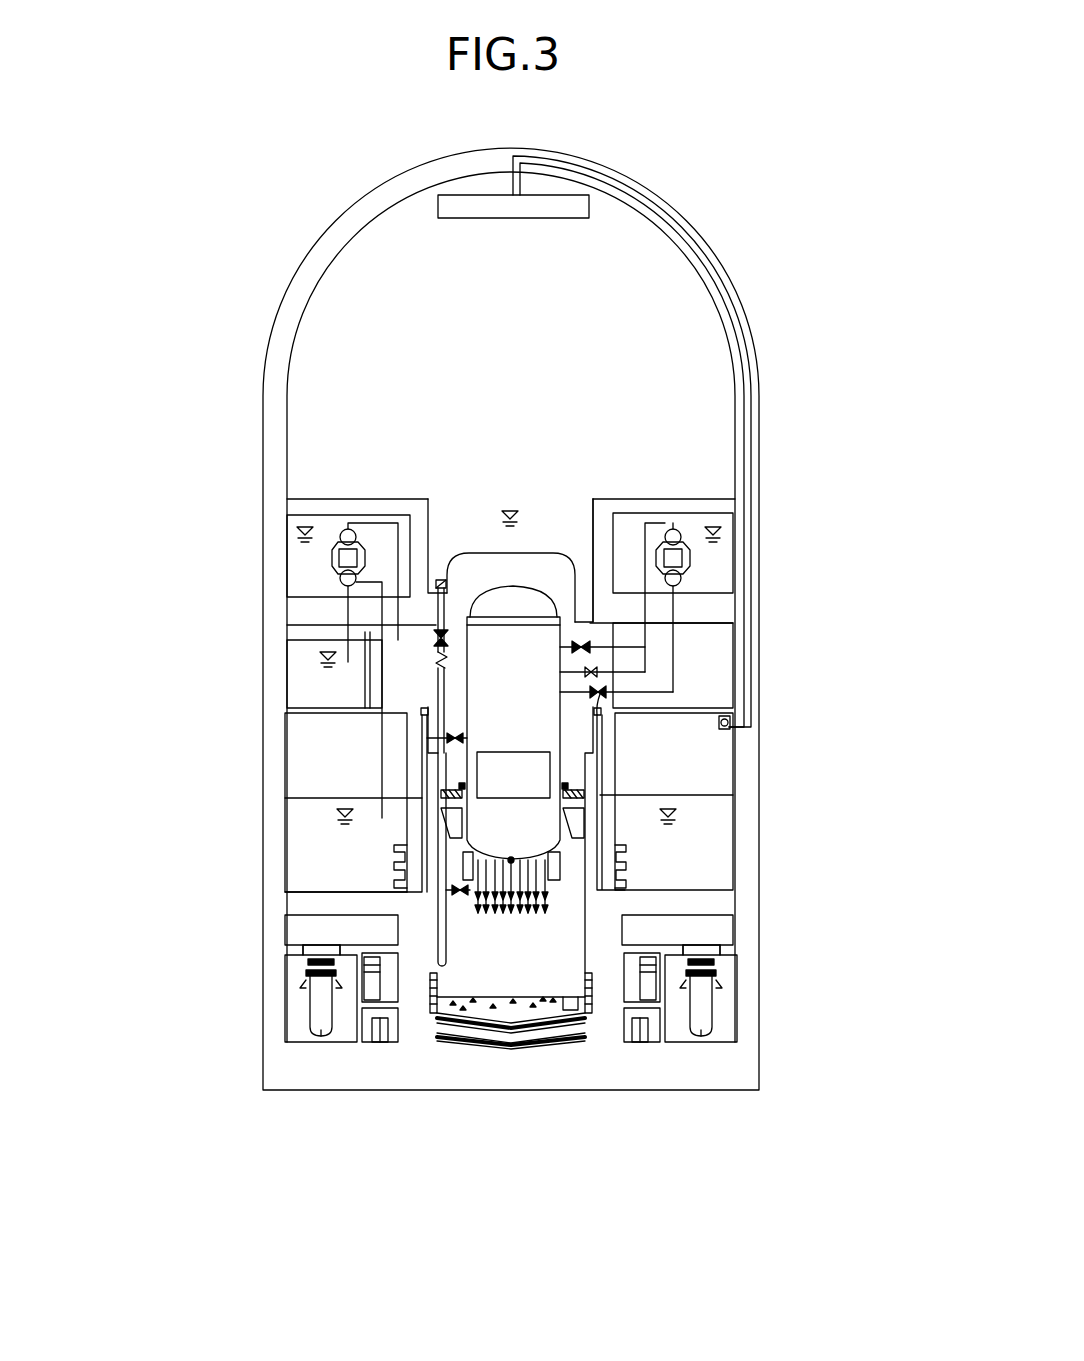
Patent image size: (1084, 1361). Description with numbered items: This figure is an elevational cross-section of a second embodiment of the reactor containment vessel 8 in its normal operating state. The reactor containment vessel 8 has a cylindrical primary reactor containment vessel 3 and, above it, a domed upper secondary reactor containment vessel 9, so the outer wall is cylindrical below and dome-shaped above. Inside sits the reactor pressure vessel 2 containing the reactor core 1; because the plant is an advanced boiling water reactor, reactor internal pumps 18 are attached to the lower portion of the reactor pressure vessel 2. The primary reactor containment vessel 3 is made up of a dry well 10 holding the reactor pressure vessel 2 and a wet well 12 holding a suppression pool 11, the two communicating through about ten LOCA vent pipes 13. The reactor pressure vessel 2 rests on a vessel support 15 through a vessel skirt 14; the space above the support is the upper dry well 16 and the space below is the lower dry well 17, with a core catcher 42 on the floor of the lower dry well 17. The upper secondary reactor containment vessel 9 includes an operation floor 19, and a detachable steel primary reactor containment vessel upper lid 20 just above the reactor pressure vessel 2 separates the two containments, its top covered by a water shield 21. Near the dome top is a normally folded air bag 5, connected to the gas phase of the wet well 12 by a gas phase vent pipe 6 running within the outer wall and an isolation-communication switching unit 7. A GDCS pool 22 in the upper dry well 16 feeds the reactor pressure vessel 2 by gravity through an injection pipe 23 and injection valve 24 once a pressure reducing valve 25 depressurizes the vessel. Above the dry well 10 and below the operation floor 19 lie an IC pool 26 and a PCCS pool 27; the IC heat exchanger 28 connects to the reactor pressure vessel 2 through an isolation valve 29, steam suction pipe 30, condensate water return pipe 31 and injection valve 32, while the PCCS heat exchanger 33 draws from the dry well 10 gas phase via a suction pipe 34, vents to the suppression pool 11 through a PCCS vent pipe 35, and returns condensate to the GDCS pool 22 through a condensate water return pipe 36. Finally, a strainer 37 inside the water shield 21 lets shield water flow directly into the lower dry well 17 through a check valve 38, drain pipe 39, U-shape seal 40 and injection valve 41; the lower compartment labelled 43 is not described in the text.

The reactor core 1 is at (535, 768).
The reactor pressure vessel 2 is at (298, 985).
The primary reactor containment vessel 3 is at (272, 705).
The air bag 5 is at (513, 208).
The gas phase vent pipe 6 is at (735, 323).
The isolation-communication switching unit 7 is at (731, 724).
The reactor containment vessel 8 is at (275, 520).
The upper secondary reactor containment vessel 9 is at (272, 378).
The dry well 10 is at (697, 662).
The suppression pool 11 is at (345, 865).
The wet well 12 is at (305, 770).
The LOCA vent pipes 13 is at (425, 895).
The vessel skirt 14 is at (584, 792).
The vessel support 15 is at (584, 818).
The upper dry well 16 is at (753, 655).
The lower dry well 17 is at (548, 957).
The reactor internal pumps 18 is at (558, 873).
The operation floor 19 is at (322, 499).
The primary reactor containment vessel upper lid 20 is at (535, 555).
The water shield 21 is at (477, 499).
The GDCS pool 22 is at (302, 660).
The injection pipe 23 is at (420, 708).
The injection valve 24 is at (447, 740).
The pressure reducing valve 25 is at (592, 643).
The IC pool 26 is at (713, 542).
The PCCS pool 27 is at (300, 550).
The IC heat exchanger 28 is at (690, 558).
The isolation valve 29 is at (610, 705).
The steam suction pipe 30 is at (605, 499).
The condensate water return pipe 31 is at (660, 673).
The injection valve 32 is at (601, 697).
The PCCS heat exchanger 33 is at (332, 560).
The suction pipe 34 is at (395, 700).
The PCCS vent pipe 35 is at (377, 810).
The condensate water return pipe 36 is at (352, 612).
The strainer 37 is at (440, 580).
The check valve 38 is at (449, 659).
The drain pipe 39 is at (445, 690).
The U-shape seal 40 is at (437, 975).
The injection valve 41 is at (460, 897).
The core catcher 42 is at (530, 1049).
The lower compartment 43 is at (293, 1080).